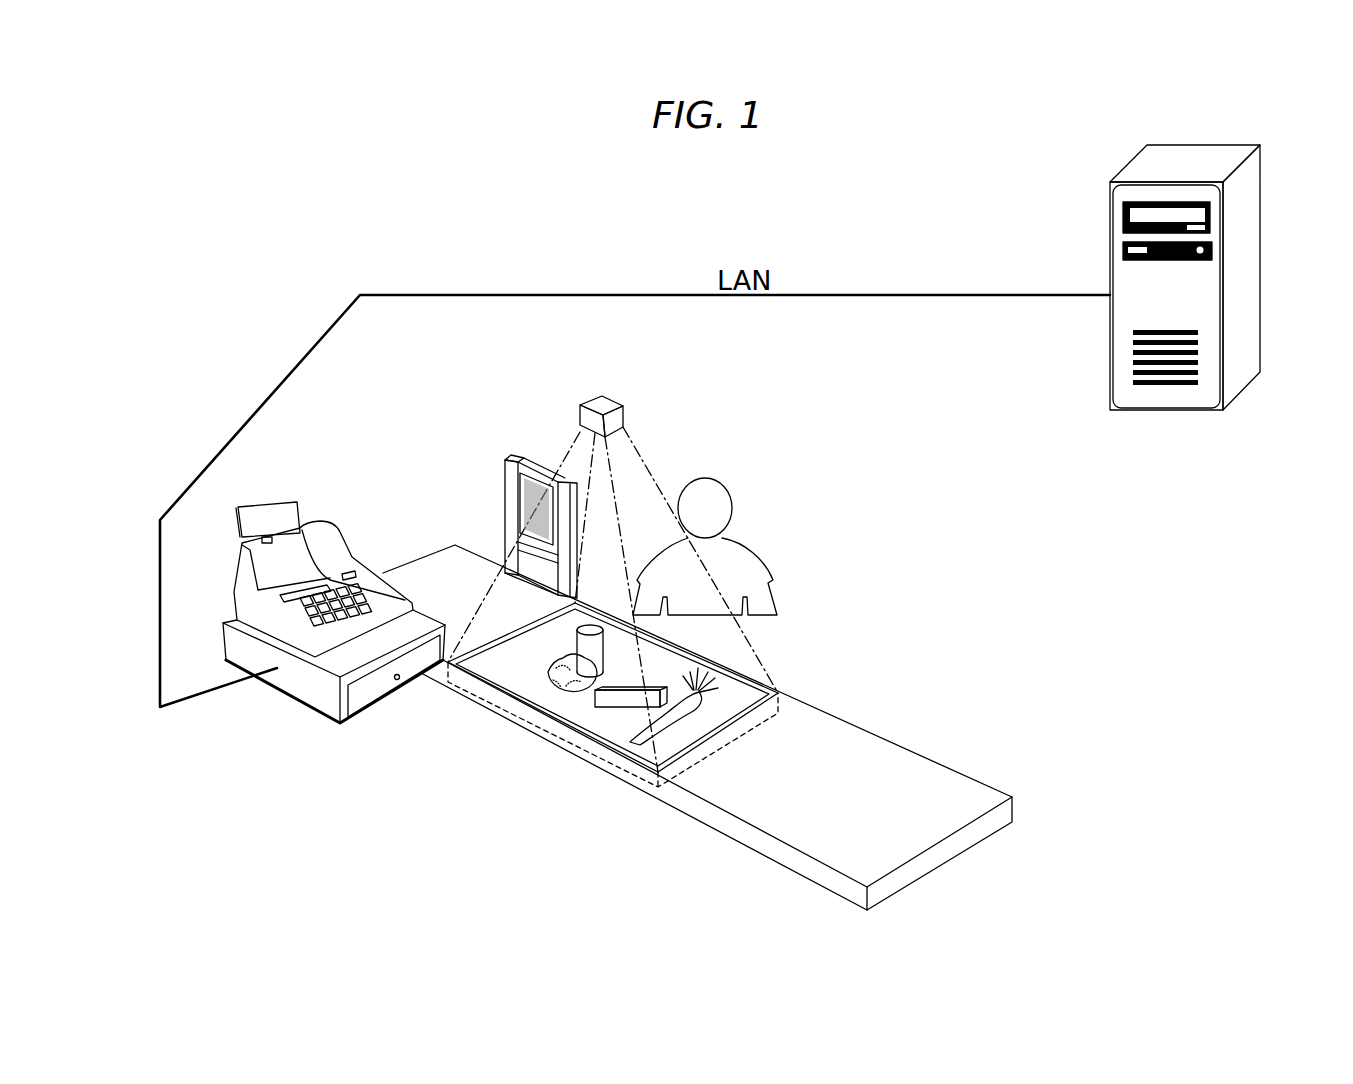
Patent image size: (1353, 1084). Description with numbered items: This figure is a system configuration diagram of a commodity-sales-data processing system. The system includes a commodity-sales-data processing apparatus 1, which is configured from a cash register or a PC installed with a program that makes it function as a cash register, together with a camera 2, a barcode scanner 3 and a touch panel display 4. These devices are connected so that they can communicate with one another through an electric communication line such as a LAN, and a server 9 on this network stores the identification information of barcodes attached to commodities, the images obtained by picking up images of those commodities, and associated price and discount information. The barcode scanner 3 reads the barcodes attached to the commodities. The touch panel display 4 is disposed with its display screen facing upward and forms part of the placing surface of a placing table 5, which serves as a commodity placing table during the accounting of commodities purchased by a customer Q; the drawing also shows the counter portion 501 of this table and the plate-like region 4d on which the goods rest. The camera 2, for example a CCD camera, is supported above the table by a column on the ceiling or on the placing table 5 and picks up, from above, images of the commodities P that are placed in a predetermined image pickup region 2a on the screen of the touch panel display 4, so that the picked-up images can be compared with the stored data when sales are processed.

The commodity-sales-data processing apparatus 1 is at (318, 703).
The camera 2 is at (607, 403).
The image pickup region 2a is at (763, 680).
The barcode scanner 3 is at (520, 503).
The touch panel display 4 is at (630, 767).
The weighing plate 4d is at (707, 723).
The placing table 5 is at (1000, 770).
The counter table 501 is at (887, 758).
The server 9 is at (1122, 377).
The commodities P is at (637, 727).
The customer Q is at (753, 548).